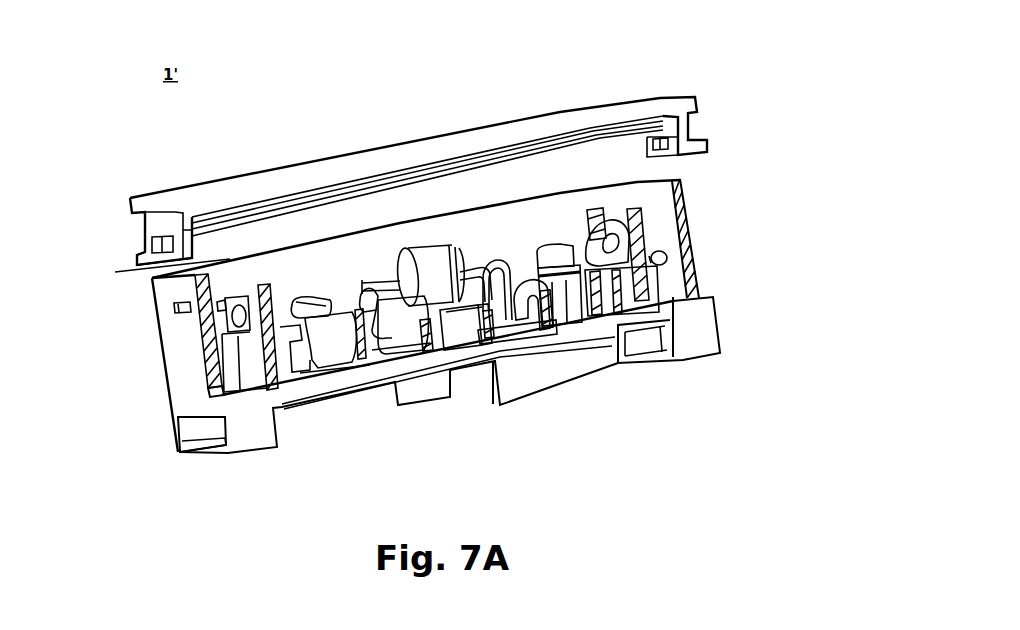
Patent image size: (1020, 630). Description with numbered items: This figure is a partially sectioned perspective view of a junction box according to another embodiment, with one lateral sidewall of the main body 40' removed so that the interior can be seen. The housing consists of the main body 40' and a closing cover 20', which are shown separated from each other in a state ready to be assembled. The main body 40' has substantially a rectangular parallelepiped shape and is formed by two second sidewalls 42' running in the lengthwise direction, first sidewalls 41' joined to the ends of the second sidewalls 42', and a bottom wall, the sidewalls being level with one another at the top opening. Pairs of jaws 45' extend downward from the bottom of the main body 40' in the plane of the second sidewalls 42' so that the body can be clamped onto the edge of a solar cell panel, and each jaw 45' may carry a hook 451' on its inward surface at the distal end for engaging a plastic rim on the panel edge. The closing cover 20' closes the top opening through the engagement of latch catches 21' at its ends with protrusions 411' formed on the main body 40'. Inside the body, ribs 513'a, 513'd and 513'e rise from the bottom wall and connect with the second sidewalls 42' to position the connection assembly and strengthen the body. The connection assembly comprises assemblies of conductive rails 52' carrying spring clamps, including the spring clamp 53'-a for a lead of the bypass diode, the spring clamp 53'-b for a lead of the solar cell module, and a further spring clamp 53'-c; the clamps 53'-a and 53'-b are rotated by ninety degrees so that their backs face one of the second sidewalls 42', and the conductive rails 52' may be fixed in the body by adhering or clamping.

The closing cover 20' is at (418, 141).
The latch catch 21' is at (128, 233).
The main body 40' is at (425, 335).
The first sidewall 41' is at (153, 363).
The second sidewall 42' is at (135, 265).
The jaw 45' is at (164, 434).
The hook 451' is at (194, 480).
The protrusion 411' is at (131, 306).
The conductive rail 52' is at (454, 379).
The spring clamp for clamping a lead of the bypass diode 53'-a is at (396, 373).
The spring clamp for clamping a lead of the solar cell module 53'-b is at (329, 382).
The spring clamp 53'-c is at (264, 383).
The rib 513'a is at (517, 368).
The rib 513'd is at (571, 350).
The rib 513'e is at (682, 256).